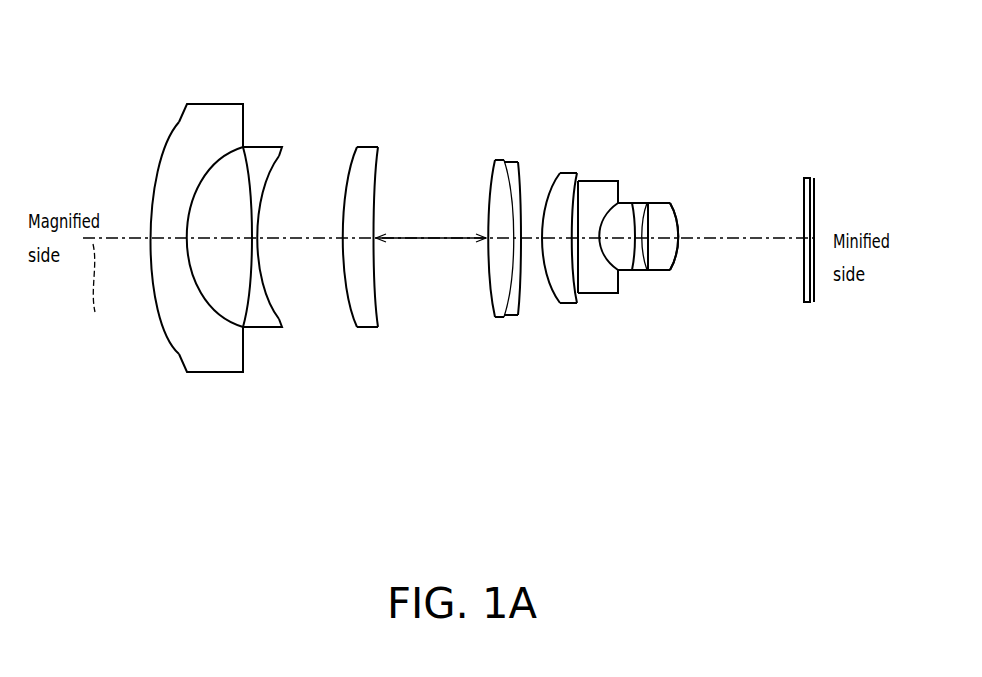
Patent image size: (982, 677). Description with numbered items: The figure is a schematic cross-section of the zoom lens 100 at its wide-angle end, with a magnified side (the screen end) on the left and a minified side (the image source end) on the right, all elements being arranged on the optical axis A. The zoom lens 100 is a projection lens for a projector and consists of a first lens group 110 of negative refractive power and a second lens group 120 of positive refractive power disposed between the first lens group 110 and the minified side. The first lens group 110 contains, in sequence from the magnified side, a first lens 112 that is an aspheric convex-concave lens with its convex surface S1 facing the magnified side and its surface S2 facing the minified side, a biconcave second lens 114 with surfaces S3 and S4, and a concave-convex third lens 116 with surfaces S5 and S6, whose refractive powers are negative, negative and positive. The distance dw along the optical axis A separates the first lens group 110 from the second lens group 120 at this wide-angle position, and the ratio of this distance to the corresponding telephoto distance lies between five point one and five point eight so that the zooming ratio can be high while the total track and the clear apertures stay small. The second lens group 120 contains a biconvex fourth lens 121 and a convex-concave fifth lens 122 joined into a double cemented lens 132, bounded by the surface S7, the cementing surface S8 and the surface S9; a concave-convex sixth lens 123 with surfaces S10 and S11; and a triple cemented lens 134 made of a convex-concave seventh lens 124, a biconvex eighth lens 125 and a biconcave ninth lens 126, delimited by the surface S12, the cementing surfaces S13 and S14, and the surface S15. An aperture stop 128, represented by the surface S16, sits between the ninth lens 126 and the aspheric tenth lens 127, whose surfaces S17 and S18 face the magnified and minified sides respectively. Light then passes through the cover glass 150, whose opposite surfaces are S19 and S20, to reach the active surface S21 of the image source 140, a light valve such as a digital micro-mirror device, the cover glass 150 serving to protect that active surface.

The zoom lens 100 is at (837, 473).
The first lens group 110 is at (188, 436).
The first lens 112 is at (197, 233).
The second lens 114 is at (283, 239).
The third lens 116 is at (352, 241).
The second lens group 120 is at (810, 412).
The fourth lens 121 is at (473, 237).
The fifth lens 122 is at (520, 238).
The sixth lens 123 is at (566, 241).
The seventh lens 124 is at (619, 208).
The eighth lens 125 is at (653, 222).
The ninth lens 126 is at (686, 212).
The tenth lens 127 is at (709, 231).
The aperture stop 128 is at (740, 243).
The double cemented lens 132 is at (458, 377).
The triple cemented lens 134 is at (722, 380).
The image source 140 is at (843, 252).
The cover glass 150 is at (818, 213).
The optical axis A is at (95, 293).
The distance between the first lens group and the second lens group at the wide-angl dw is at (431, 222).
The surface S1 is at (178, 122).
The surface S2 is at (214, 172).
The surface S3 is at (243, 174).
The surface S4 is at (265, 186).
The surface S5 is at (349, 172).
The surface S6 is at (378, 173).
The surface S7 is at (488, 195).
The surface S8 is at (507, 178).
The surface S9 is at (520, 172).
The surface S10 is at (554, 190).
The surface S11 is at (577, 191).
The surface S12 is at (576, 251).
The surface S13 is at (599, 230).
The surface S14 is at (635, 228).
The surface S15 is at (643, 233).
The surface S16 is at (650, 258).
The surface S17 is at (678, 248).
The surface S18 is at (680, 226).
The surface S19 is at (804, 192).
The surface S20 is at (811, 190).
The surface S21 is at (814, 215).